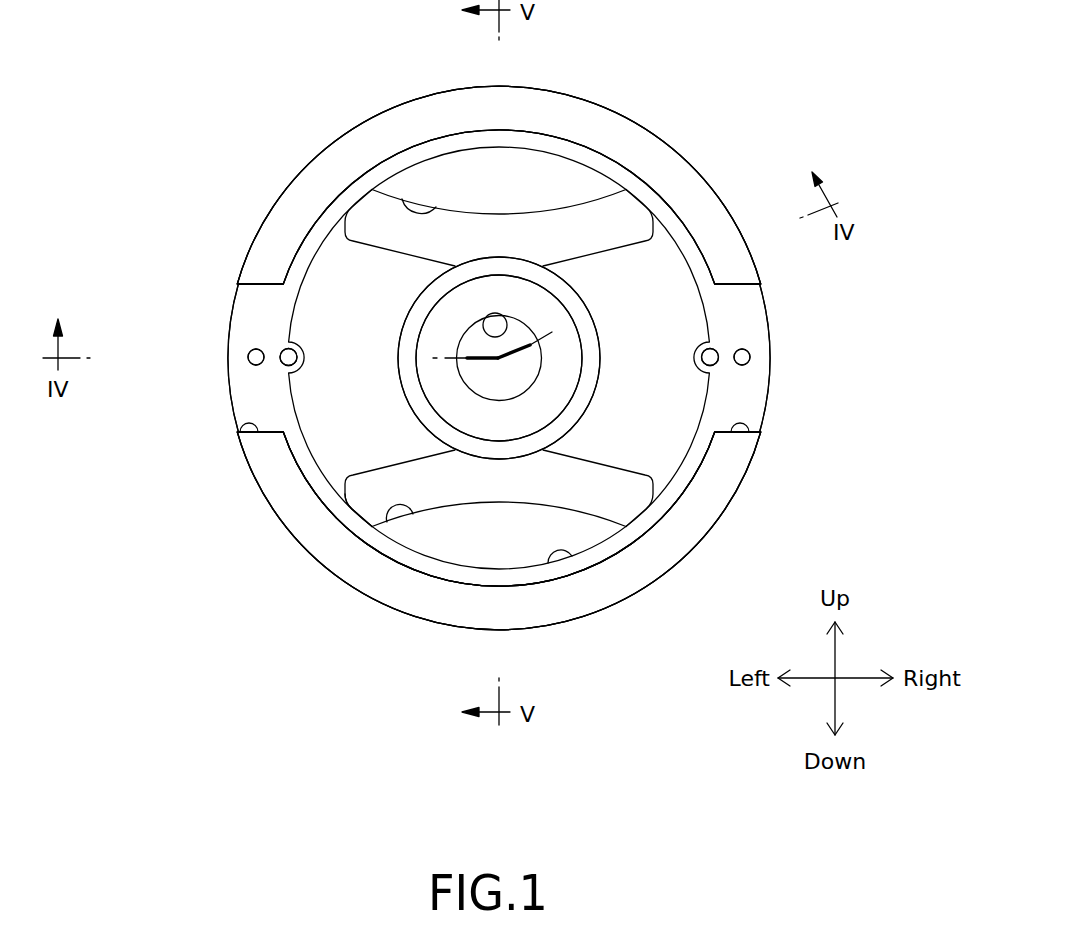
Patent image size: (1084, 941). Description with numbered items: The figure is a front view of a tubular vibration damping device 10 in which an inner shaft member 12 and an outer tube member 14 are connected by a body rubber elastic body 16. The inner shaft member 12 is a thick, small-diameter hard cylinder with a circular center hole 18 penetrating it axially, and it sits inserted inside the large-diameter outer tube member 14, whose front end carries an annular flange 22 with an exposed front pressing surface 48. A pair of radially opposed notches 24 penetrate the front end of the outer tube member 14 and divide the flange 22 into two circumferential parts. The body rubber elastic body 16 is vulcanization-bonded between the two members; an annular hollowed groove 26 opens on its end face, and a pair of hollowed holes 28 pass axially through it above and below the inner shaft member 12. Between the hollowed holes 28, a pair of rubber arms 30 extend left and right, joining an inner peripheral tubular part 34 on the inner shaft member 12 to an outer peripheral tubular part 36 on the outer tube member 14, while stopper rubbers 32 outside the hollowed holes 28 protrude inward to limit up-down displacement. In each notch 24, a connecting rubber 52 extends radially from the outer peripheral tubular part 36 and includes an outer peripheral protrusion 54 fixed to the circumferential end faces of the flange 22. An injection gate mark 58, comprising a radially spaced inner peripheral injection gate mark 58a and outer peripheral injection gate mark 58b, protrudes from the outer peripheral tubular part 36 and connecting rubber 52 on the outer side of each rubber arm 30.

The tubular vibration damping device 10 is at (692, 94).
The inner shaft member 12 is at (592, 384).
The outer tube member 14 is at (732, 529).
The body rubber elastic body 16 is at (684, 234).
The center hole 18 is at (472, 330).
The flange 22 is at (618, 594).
The notch 24 is at (242, 420).
The hollowed groove 26 is at (549, 553).
The hollowed hole 28 is at (402, 196).
The rubber arm 30 is at (336, 290).
The stopper rubber 32 is at (535, 176).
The inner peripheral tubular part 34 is at (414, 388).
The outer peripheral tubular part 36 is at (336, 512).
The pressing surface 48 is at (656, 551).
The connecting rubber 52 is at (226, 299).
The outer peripheral protrusion 54 is at (241, 395).
The injection gate mark 58 is at (140, 292).
The inner peripheral injection gate mark 58a is at (284, 351).
The outer peripheral injection gate mark 58b is at (247, 356).